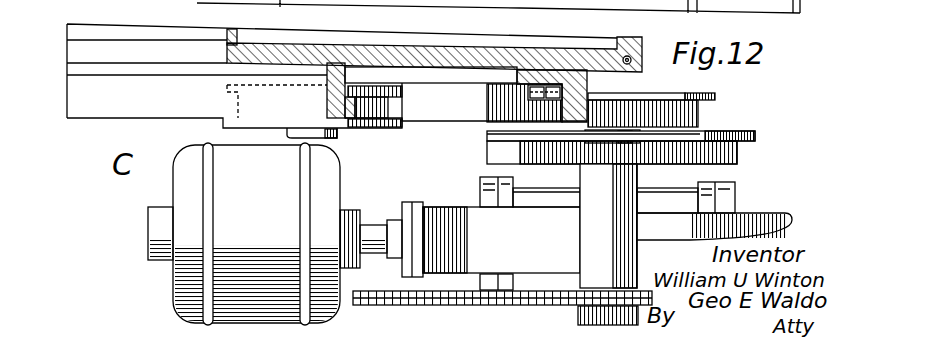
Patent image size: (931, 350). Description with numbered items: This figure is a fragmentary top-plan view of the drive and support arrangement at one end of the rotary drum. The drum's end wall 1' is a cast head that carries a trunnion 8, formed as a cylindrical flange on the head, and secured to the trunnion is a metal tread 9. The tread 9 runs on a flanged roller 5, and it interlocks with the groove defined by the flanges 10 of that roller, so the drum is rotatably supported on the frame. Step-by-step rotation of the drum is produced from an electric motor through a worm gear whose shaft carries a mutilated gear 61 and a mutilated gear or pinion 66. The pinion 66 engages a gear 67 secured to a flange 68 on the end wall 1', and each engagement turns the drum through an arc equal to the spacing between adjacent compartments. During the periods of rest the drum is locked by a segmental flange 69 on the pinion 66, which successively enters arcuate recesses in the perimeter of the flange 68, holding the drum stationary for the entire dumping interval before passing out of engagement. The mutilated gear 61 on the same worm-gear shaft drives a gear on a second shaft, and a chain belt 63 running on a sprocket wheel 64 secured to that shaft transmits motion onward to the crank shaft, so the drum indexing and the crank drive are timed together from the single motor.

The end wall 1' is at (434, 43).
The flanged roller 5 is at (380, 128).
The trunnion 8 is at (327, 105).
The metal tread 9 is at (348, 128).
The flange 10 is at (402, 126).
The mutilated gear 61 is at (733, 138).
The chain belt 63 is at (515, 300).
The sprocket wheel 64 is at (487, 298).
The mutilated pinion 66 is at (700, 118).
The gear 67 is at (590, 107).
The flange 68 is at (568, 70).
The segmental flange 69 is at (713, 94).